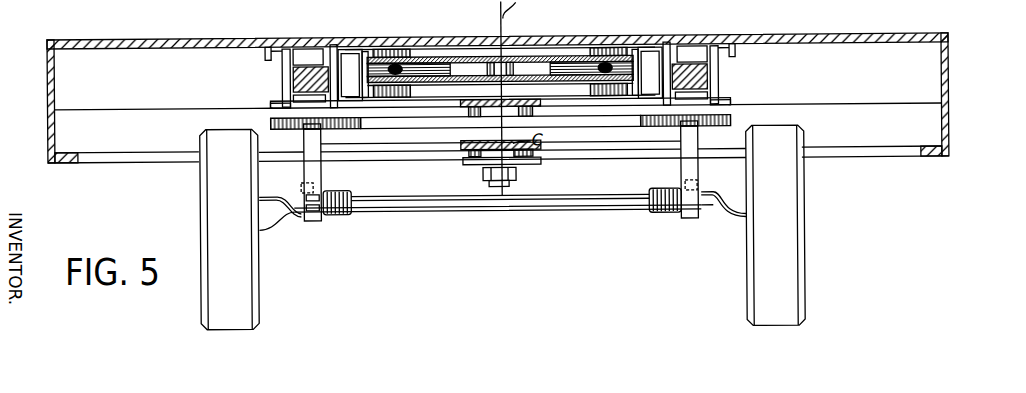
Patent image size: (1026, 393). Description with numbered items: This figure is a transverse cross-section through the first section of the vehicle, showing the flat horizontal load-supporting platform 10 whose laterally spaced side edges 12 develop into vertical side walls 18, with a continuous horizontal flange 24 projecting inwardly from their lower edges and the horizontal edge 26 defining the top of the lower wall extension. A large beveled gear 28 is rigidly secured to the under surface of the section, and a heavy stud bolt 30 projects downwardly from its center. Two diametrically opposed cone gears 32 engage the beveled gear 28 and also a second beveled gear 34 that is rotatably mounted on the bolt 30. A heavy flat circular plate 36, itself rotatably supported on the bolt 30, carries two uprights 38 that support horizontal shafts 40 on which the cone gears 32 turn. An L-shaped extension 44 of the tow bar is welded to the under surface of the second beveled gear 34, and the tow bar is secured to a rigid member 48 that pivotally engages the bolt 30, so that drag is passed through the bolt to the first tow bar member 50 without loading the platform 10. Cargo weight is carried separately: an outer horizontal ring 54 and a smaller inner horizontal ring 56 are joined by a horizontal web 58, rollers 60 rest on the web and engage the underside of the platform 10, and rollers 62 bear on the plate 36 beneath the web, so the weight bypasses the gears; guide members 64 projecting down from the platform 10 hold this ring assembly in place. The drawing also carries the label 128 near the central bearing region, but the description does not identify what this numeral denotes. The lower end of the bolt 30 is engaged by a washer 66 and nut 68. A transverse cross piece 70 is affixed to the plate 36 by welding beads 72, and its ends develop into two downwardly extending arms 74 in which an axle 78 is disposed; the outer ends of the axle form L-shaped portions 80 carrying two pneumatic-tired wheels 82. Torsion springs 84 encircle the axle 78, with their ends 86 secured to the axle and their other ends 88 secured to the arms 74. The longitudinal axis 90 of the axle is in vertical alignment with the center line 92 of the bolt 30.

The load-supporting platform 10 is at (210, 40).
The side edges 12 is at (504, 81).
The side walls 18 is at (47, 95).
The horizontal flange 24 is at (62, 163).
The horizontal edge 26 is at (143, 110).
The beveled gear 28 is at (452, 50).
The stud bolt 30 is at (512, 64).
The cone gears 32 is at (392, 68).
The second beveled gear 34 is at (420, 110).
The circular plate 36 is at (730, 122).
The uprights 38 is at (363, 48).
The horizontal shafts 40 is at (402, 62).
The L-shaped extension 44 is at (500, 104).
The rigid member 48 is at (463, 156).
The first tow bar member 50 is at (541, 165).
The outer horizontal ring 54 is at (282, 68).
The inner horizontal ring 56 is at (339, 48).
The horizontal web 58 is at (300, 82).
The rollers 60 is at (302, 51).
The rollers 62 is at (300, 112).
The guide members 64 is at (265, 56).
The washer 66 is at (482, 176).
The nut 68 is at (515, 185).
The transverse cross piece 70 is at (648, 136).
The welding beads 72 is at (302, 134).
The arms 74 is at (306, 158).
The axle 78 is at (466, 210).
The L-shaped portions 80 is at (280, 233).
The pneumatic-tired wheels 82 is at (258, 292).
The torsion springs 84 is at (322, 216).
The spring ends 86 is at (354, 206).
The spring ends 88 is at (300, 189).
The longitudinal axis 90 is at (546, 216).
The center line 92 is at (522, 9).
The bearing 128 is at (462, 118).